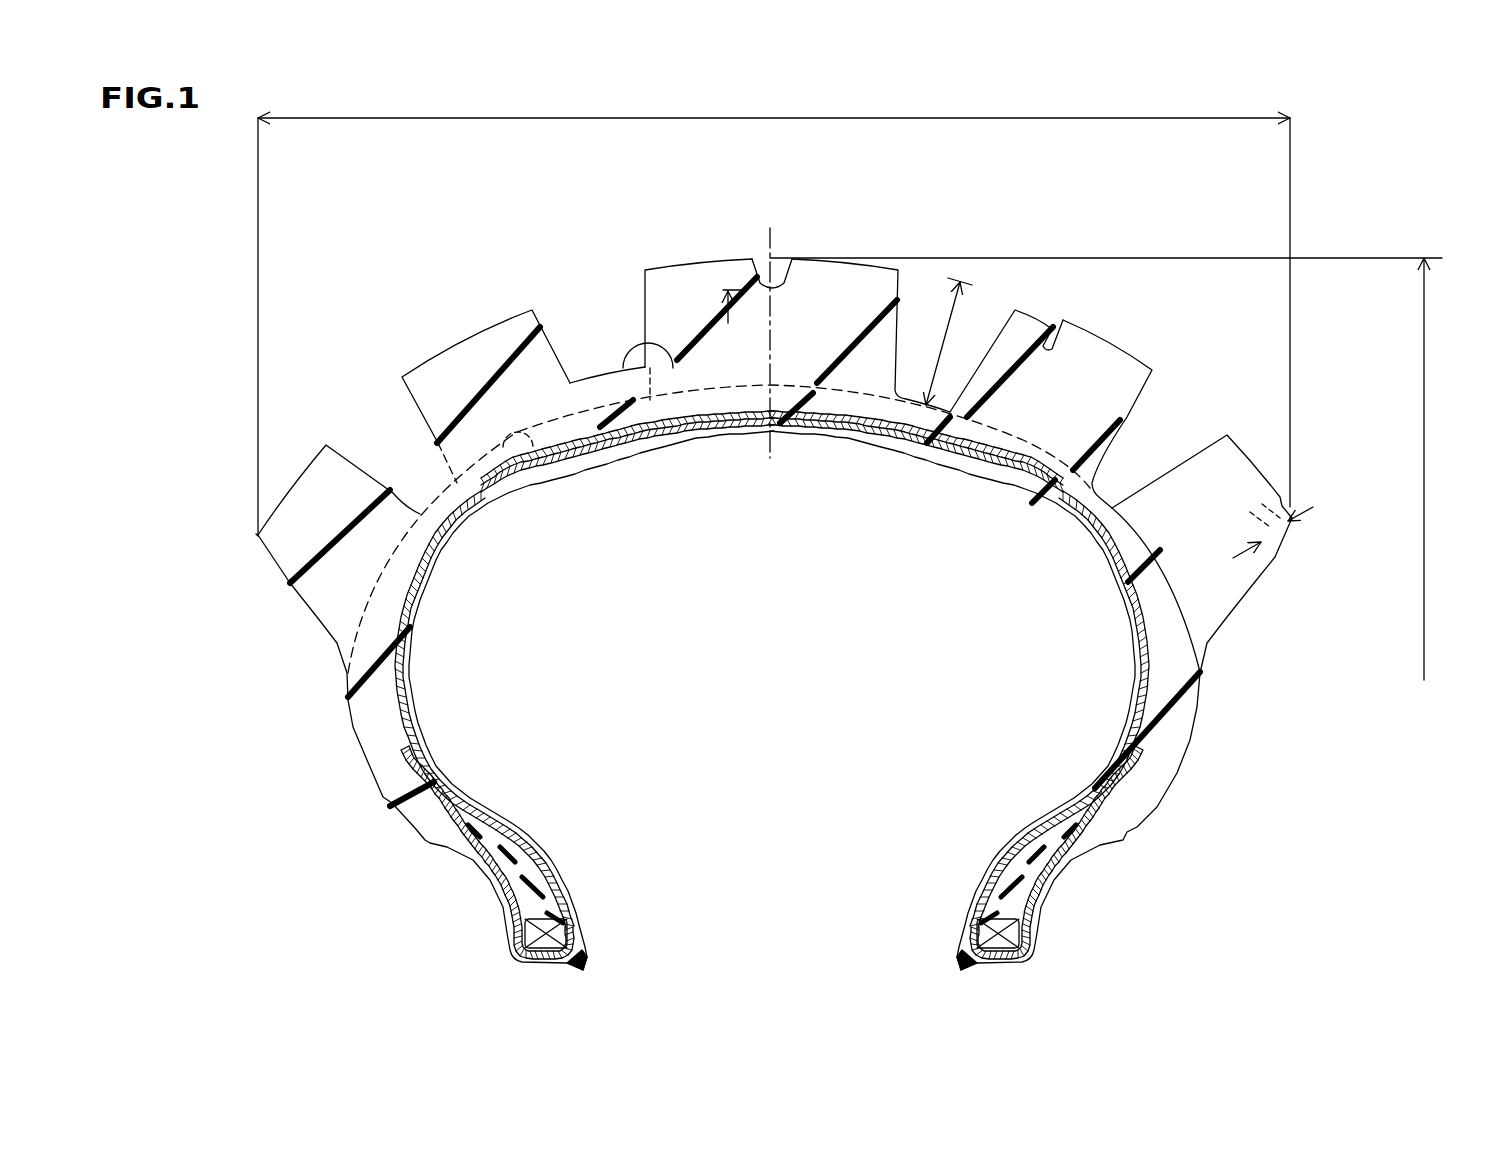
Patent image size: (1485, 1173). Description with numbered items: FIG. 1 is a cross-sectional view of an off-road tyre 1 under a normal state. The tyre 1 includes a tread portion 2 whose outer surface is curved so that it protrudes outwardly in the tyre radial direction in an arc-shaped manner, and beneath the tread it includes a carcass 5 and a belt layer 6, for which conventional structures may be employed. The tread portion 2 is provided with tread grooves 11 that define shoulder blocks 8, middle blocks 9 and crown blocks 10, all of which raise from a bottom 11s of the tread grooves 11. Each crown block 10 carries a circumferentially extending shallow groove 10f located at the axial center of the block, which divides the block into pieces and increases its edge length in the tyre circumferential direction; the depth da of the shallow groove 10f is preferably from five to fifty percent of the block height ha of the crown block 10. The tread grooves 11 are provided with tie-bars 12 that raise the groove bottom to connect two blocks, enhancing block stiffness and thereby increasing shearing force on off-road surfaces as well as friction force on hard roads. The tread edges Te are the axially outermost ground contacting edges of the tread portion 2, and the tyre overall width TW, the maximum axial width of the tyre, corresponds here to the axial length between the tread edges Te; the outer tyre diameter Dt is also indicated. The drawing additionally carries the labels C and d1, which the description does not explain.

The off-road tyre 1 is at (1405, 205).
The tread portion 2 is at (1310, 228).
The carcass 5 is at (1147, 677).
The belt layer 6 is at (890, 424).
The shoulder blocks 8 is at (298, 452).
The middle blocks 9 is at (432, 345).
The crown blocks 10 is at (672, 256).
The shallow groove 10f is at (783, 262).
The tread grooves 11 is at (592, 362).
The bottom of the tread grooves 11s is at (533, 447).
The tie-bars 12 is at (673, 366).
The tyre overall width TW is at (774, 310).
The outer tyre diameter Dt is at (1106, 488).
The tire equator C is at (771, 326).
The tread edges Te is at (256, 534).
The depth of the shallow groove da is at (727, 256).
The block height of the crown block ha is at (946, 345).
The thickness at tread edge d1 is at (1283, 540).